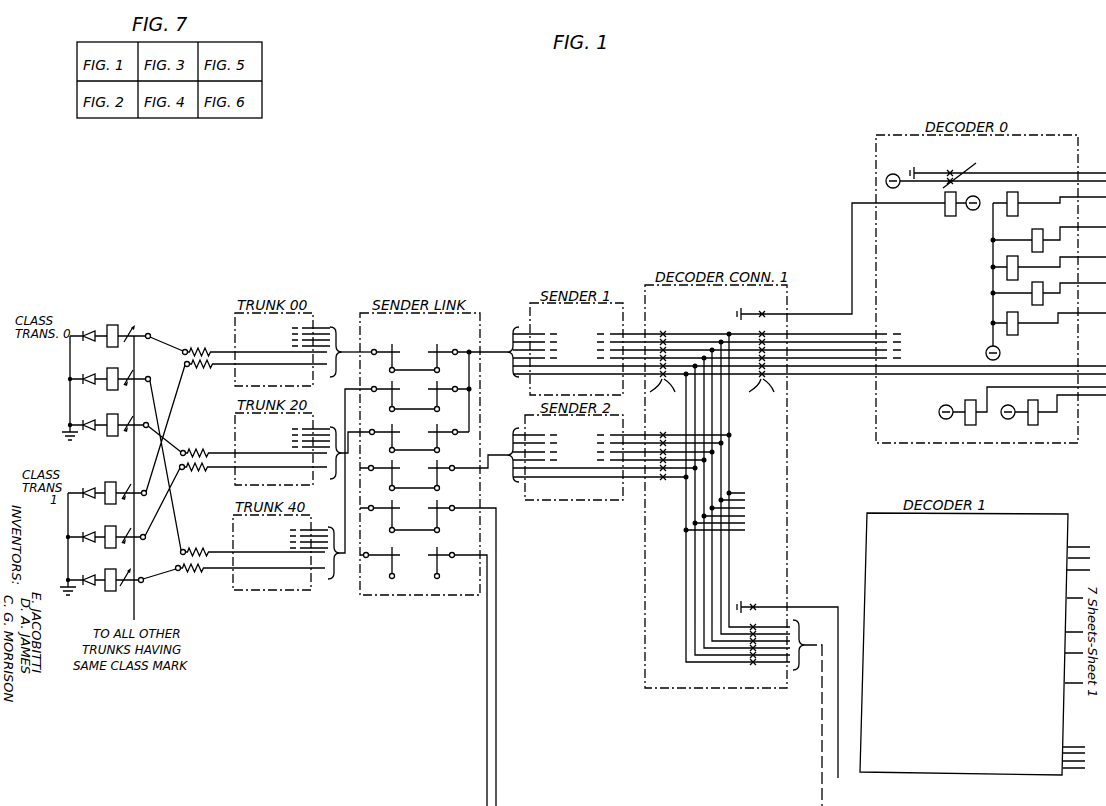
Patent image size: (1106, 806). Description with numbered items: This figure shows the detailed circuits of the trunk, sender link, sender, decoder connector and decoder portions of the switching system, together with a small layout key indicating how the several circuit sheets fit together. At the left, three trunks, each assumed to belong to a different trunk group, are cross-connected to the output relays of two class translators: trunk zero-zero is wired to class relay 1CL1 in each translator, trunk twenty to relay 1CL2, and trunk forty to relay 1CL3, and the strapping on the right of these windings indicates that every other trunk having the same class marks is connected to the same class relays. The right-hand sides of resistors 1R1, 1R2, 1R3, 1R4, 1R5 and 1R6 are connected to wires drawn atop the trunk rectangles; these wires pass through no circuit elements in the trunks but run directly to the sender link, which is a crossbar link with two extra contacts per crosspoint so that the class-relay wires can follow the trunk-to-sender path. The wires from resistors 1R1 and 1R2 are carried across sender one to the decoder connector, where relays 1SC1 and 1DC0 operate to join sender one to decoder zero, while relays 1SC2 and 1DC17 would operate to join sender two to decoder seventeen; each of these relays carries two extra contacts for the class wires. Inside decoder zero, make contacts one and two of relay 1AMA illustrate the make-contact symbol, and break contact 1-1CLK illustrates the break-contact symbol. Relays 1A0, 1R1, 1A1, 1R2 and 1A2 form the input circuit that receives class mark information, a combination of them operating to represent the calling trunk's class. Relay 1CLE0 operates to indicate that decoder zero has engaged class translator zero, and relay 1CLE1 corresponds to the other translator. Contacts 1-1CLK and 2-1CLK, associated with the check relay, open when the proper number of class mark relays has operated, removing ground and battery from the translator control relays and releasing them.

The class relay 1CL1 is at (109, 405).
The class relay 1CL2 is at (109, 450).
The class relay 1CL3 is at (108, 494).
The resistor 1R1 is at (645, 284).
The resistor 1R2 is at (646, 325).
The resistor 1R3 is at (254, 446).
The resistor 1R4 is at (254, 475).
The resistor 1R5 is at (253, 545).
The resistor 1R6 is at (251, 576).
The sender connector relay 1SC1 is at (664, 359).
The sender connector relay 1SC2 is at (669, 448).
The decoder connector relay 1DC0 is at (841, 304).
The decoder connector relay 1DC17 is at (787, 698).
The relay 1AMA is at (957, 216).
The class mark information receiving relay 1A0 is at (1047, 197).
The class mark information receiving relay 1A1 is at (1047, 261).
The class mark information receiving relay 1A2 is at (1047, 317).
The relay 1CLE0 is at (1019, 404).
The relay 1CLE1 is at (1053, 405).
The break contact 1-1CLK is at (1008, 169).
The break contact 2-1CLK is at (996, 188).